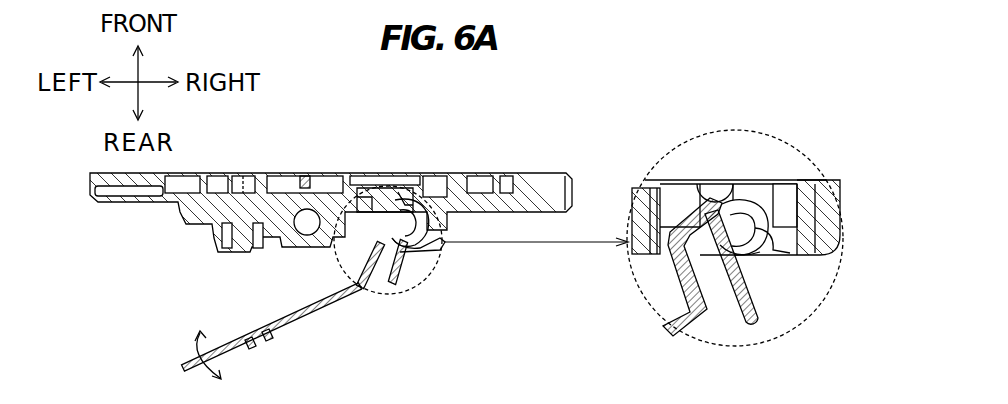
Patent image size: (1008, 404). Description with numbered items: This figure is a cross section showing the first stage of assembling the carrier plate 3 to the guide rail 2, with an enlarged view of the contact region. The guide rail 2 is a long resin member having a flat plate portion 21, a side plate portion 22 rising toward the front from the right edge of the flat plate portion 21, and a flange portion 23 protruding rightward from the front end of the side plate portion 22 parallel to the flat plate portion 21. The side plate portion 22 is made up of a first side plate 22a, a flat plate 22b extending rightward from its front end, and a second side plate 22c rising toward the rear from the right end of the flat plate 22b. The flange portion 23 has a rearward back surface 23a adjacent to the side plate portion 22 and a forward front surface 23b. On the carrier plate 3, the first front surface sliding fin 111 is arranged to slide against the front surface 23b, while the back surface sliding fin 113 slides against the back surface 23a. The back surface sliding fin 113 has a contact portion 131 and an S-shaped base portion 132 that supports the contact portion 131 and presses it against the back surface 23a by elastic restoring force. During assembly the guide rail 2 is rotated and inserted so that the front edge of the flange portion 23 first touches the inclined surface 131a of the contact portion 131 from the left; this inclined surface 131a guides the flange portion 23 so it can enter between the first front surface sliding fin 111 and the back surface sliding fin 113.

The guide rail 2 is at (250, 328).
The carrier plate 3 is at (524, 170).
The flat plate portion 21 is at (307, 303).
The side plate portion 22 is at (383, 273).
The first side plate 22a is at (690, 318).
The flat plate 22b is at (690, 208).
The second side plate 22c is at (750, 258).
The flange portion 23 is at (352, 212).
The back surface 23a is at (722, 292).
The front surface 23b is at (700, 197).
The first front surface sliding fin 111 is at (728, 190).
The back surface sliding fin 113 is at (398, 250).
The contact portion 131 is at (410, 193).
The inclined surface 131a is at (718, 180).
The base portion 132 is at (414, 250).